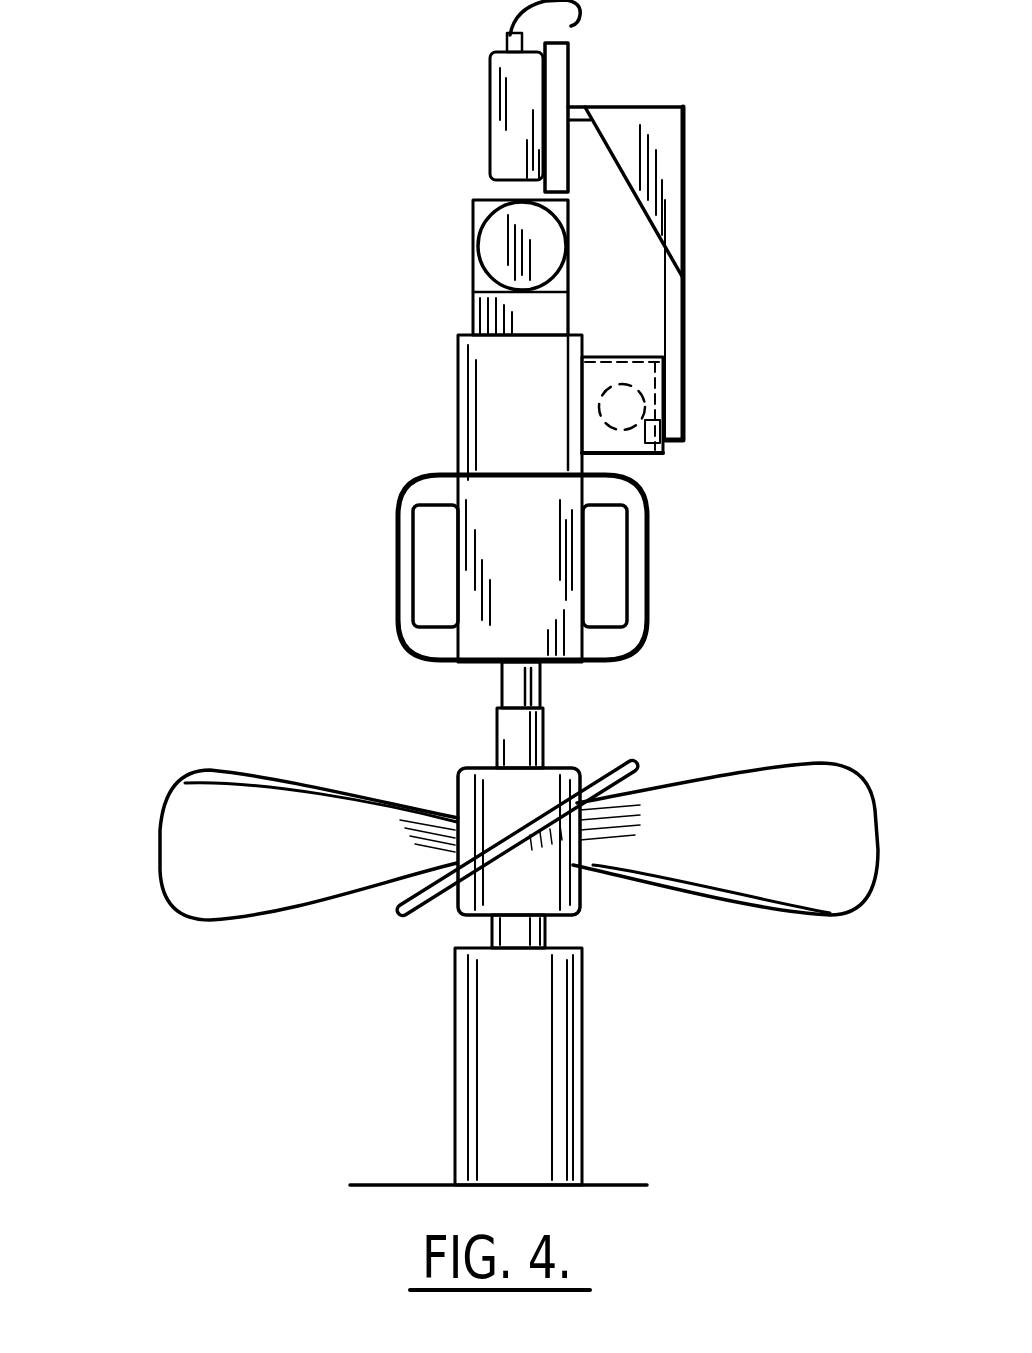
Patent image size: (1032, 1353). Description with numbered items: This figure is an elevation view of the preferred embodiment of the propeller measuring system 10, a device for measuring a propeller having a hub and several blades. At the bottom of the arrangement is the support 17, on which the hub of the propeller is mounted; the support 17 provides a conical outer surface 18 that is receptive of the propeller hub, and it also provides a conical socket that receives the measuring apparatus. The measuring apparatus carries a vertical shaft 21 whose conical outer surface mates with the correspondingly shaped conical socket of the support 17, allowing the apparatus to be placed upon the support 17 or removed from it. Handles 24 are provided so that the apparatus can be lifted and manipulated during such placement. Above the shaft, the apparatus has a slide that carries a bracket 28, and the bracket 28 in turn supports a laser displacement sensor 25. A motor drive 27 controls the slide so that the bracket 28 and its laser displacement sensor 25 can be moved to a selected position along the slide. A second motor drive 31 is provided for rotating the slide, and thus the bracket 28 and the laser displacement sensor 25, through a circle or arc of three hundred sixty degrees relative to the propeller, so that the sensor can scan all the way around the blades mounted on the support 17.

The propeller measuring system 10 is at (106, 88).
The support 17 is at (528, 1098).
The conical outer surface 18 is at (540, 738).
The shaft 21 is at (508, 687).
The handles 24 is at (398, 565).
The laser displacement sensor 25 is at (490, 108).
The motor drive 27 is at (636, 352).
The bracket 28 is at (688, 278).
The second motor drive 31 is at (520, 240).